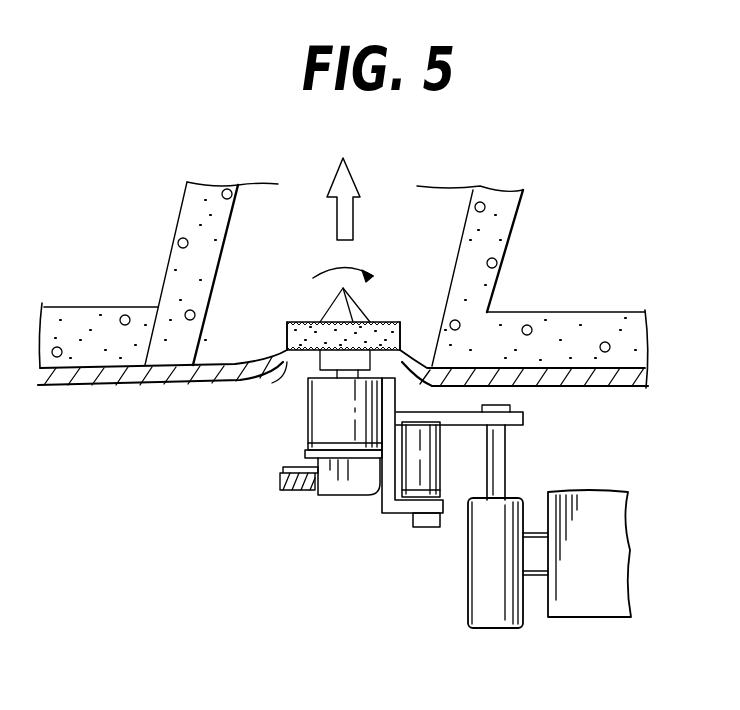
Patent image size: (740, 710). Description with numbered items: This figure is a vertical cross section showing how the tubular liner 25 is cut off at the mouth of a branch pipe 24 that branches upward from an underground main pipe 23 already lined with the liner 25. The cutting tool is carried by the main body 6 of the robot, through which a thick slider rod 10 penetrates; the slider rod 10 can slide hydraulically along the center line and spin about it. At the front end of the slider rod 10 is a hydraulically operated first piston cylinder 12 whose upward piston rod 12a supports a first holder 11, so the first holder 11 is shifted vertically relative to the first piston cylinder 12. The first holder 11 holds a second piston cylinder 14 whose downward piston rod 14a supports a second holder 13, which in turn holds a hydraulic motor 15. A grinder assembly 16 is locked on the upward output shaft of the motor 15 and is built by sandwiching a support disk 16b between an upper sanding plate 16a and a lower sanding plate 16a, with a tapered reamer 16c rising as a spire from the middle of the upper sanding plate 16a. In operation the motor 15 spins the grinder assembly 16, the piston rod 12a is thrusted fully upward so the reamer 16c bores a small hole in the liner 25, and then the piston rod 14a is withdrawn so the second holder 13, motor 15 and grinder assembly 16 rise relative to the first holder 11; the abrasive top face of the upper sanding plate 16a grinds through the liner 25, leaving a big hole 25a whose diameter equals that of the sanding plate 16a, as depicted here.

The main body 6 is at (610, 507).
The slider rod 10 is at (545, 580).
The first holder 11 is at (523, 418).
The first piston cylinder 12 is at (470, 617).
The piston rod 12a is at (505, 462).
The second holder 13 is at (385, 497).
The second piston cylinder 14 is at (423, 478).
The piston rod 14a is at (432, 527).
The hydraulic motor 15 is at (318, 430).
The grinder assembly 16 is at (297, 318).
The sanding plate 16a is at (385, 322).
The support disk 16b is at (287, 334).
The tapered reamer 16c is at (353, 300).
The main pipe 23 is at (585, 330).
The branch pipe 24 is at (490, 250).
The tubular liner 25 is at (616, 382).
The big hole 25a is at (288, 355).